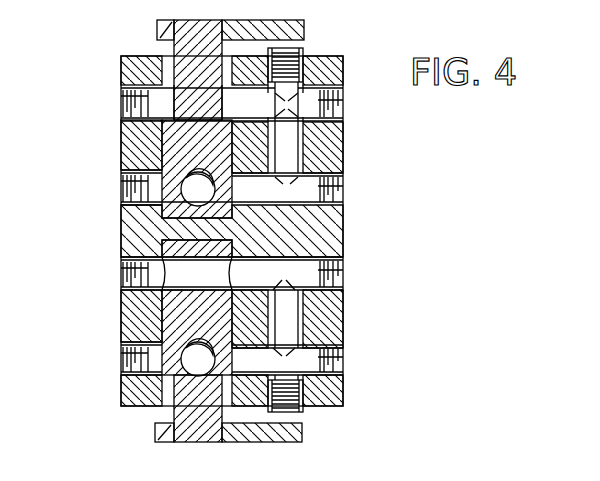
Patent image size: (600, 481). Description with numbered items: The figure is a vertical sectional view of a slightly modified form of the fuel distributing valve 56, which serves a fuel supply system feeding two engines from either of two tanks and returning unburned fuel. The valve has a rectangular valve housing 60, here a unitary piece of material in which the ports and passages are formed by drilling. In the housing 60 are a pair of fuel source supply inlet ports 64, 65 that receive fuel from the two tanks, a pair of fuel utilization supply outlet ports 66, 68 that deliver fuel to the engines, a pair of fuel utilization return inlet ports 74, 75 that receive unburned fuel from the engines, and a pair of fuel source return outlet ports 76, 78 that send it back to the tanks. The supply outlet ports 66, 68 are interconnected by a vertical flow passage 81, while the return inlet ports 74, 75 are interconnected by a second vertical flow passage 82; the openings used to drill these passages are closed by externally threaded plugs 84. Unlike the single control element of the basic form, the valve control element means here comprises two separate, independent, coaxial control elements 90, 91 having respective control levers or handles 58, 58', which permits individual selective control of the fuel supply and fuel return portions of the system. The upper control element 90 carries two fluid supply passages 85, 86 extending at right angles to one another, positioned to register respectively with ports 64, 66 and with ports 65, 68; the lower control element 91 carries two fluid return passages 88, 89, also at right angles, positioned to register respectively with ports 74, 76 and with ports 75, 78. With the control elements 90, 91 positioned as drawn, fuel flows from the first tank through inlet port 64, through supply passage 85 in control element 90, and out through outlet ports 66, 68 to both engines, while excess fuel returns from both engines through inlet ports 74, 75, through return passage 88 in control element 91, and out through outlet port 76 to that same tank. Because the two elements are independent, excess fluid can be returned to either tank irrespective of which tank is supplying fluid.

The fuel distributing valve 56 is at (343, 67).
The operating lever or handle 58 is at (266, 26).
The control lever or handle 58' is at (228, 449).
The valve housing 60 is at (332, 228).
The fuel source supply inlet port 64 is at (128, 101).
The fuel source supply inlet port 65 is at (124, 185).
The fuel utilization supply outlet port 66 is at (343, 108).
The fuel utilization supply outlet port 68 is at (343, 172).
The fuel utilization return inlet port 74 is at (343, 268).
The fuel utilization return inlet port 75 is at (330, 372).
The fuel source return outlet port 76 is at (130, 272).
The fuel source return outlet port 78 is at (123, 350).
The vertical flow passage 81 is at (297, 145).
The second vertical flow passage 82 is at (292, 320).
The externally threaded plug 84 is at (292, 54).
The fluid supply passage 85 is at (175, 96).
The fluid supply passage 86 is at (184, 194).
The fluid return passage 88 is at (180, 260).
The fluid return passage 89 is at (182, 362).
The control element 90 is at (168, 152).
The control element 91 is at (177, 392).